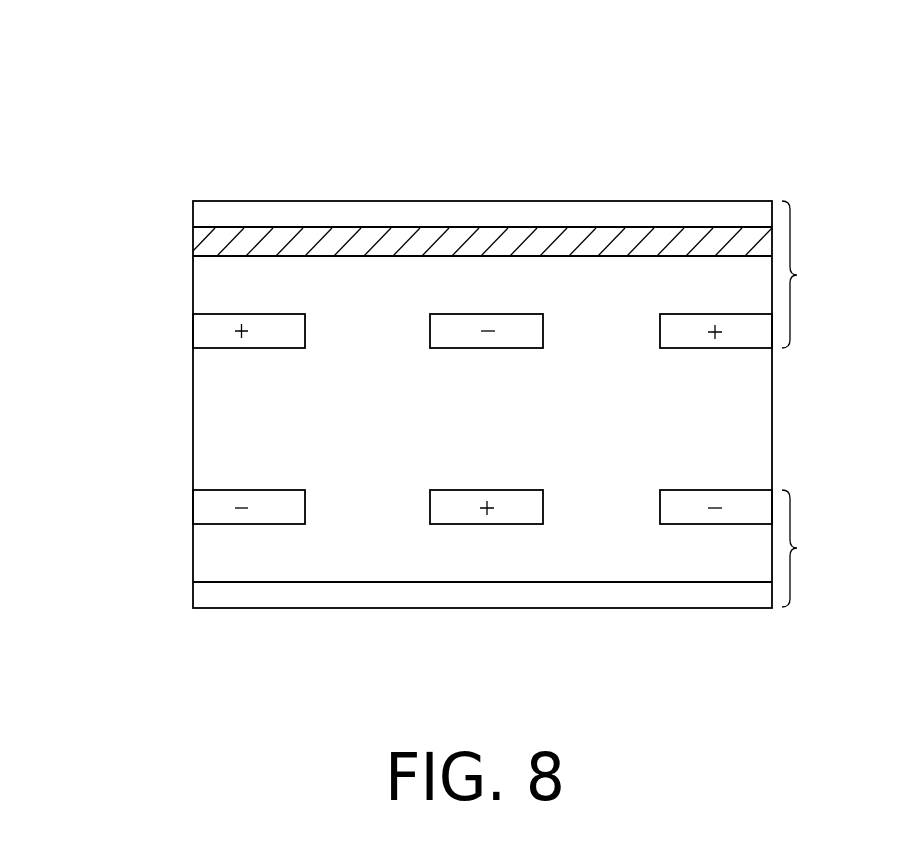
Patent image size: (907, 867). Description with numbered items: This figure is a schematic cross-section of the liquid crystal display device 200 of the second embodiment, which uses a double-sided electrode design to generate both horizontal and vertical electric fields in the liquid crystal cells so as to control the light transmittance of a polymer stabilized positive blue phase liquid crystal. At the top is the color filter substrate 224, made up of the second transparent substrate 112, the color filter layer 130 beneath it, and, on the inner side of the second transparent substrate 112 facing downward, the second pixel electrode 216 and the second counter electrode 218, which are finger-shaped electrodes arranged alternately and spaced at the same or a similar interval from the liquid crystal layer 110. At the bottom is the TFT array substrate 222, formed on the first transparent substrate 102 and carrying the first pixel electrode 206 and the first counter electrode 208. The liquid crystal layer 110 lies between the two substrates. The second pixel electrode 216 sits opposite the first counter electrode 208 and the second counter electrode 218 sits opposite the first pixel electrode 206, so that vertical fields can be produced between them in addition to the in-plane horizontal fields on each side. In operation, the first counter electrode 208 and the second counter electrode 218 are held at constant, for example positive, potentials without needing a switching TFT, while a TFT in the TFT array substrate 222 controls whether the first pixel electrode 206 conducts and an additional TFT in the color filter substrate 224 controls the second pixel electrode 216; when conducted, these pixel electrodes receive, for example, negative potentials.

The liquid crystal display device 200 is at (747, 80).
The second transparent substrate 112 is at (205, 214).
The color filter layer 130 is at (213, 243).
The second counter electrode 218 is at (203, 333).
The second pixel electrode 216 is at (467, 325).
The liquid crystal layer 110 is at (205, 422).
The first pixel electrode 206 is at (200, 507).
The first counter electrode 208 is at (465, 517).
The first transparent substrate 102 is at (203, 598).
The color filter substrate 224 is at (817, 274).
The TFT array substrate 222 is at (817, 548).